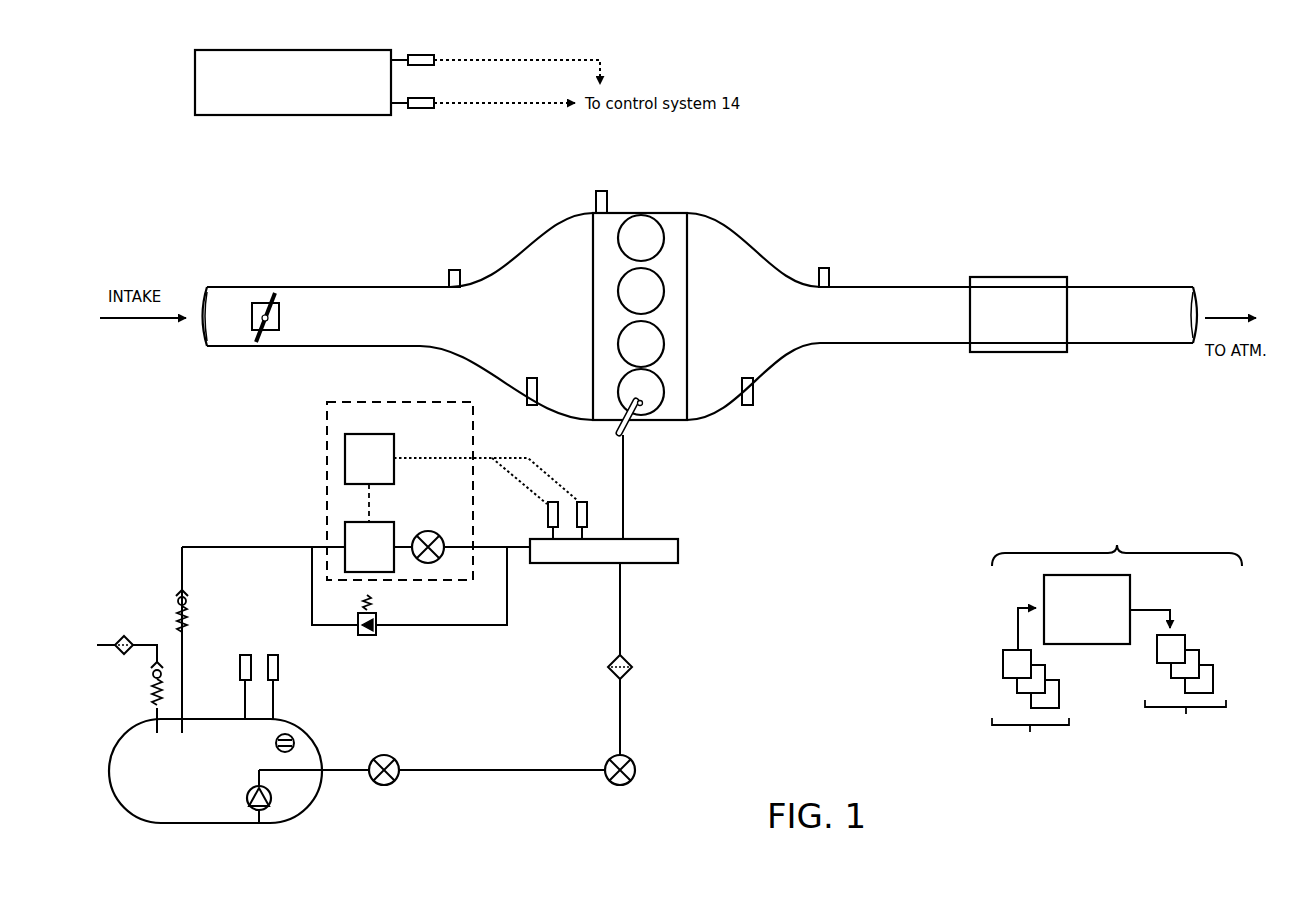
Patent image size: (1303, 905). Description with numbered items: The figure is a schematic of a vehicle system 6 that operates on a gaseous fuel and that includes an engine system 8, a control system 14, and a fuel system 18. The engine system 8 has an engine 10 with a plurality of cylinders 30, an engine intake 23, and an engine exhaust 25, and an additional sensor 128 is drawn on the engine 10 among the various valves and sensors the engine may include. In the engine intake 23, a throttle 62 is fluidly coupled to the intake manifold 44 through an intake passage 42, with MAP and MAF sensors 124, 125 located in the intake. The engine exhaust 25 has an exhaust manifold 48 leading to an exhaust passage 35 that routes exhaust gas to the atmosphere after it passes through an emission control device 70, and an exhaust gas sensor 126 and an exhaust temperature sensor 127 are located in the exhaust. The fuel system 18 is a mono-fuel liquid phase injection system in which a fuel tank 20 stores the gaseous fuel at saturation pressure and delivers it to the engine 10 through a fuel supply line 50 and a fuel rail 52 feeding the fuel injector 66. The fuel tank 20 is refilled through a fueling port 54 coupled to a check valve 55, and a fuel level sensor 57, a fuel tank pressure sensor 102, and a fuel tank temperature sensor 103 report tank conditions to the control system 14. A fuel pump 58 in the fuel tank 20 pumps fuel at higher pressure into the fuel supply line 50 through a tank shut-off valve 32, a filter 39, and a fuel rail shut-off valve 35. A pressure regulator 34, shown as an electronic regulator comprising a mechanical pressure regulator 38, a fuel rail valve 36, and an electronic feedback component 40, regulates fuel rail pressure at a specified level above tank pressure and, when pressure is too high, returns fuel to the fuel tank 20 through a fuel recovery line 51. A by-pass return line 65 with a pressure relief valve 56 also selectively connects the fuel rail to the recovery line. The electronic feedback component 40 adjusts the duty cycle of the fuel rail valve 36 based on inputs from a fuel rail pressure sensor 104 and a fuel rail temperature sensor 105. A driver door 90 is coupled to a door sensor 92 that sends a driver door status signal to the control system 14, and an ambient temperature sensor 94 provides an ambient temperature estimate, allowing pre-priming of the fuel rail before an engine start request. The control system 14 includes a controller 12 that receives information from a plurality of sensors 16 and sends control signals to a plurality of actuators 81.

The vehicle system 6 is at (88, 58).
The engine system 8 is at (770, 198).
The engine 10 is at (687, 298).
The controller 12 is at (1087, 609).
The control system 14 is at (1117, 536).
The sensors 16 is at (1030, 688).
The fuel system 18 is at (130, 508).
The fuel tank 20 is at (287, 823).
The engine intake 23 is at (405, 270).
The engine exhaust 25 is at (1030, 226).
The cylinders 30 is at (661, 228).
The tank shut-off valve 32 is at (396, 745).
The pressure regulator 34 is at (385, 402).
The fuel rail shut-off valve 35 is at (630, 760).
The fuel rail valve 36 is at (440, 535).
The mechanical pressure regulator 38 is at (359, 556).
The filter 39 is at (628, 658).
The electronic feedback component 40 is at (359, 468).
The intake passage 42 is at (312, 346).
The intake manifold 44 is at (543, 327).
The exhaust manifold 48 is at (746, 327).
The fuel supply line 50 is at (457, 772).
The fuel recovery line 51 is at (232, 548).
The fuel rail 52 is at (663, 539).
The fueling port 54 is at (124, 632).
The check valve 55 is at (150, 700).
The pressure relief valve 56 is at (370, 635).
The fuel level sensor 57 is at (288, 735).
The fuel pump 58 is at (271, 798).
The throttle 62 is at (279, 325).
The by-pass return line 65 is at (440, 625).
The fuel injector 66 is at (632, 428).
The emission control device 70 is at (1008, 327).
The actuators 81 is at (1178, 682).
The driver door 90 is at (305, 90).
The door sensor 92 is at (424, 108).
The temperature sensor 94 is at (424, 55).
The fuel tank pressure sensor 102 is at (243, 655).
The fuel tank temperature sensor 103 is at (273, 655).
The fuel rail pressure sensor 104 is at (592, 494).
The fuel rail temperature sensor 105 is at (548, 510).
The MAP sensor 124 is at (460, 283).
The MAF sensor 125 is at (527, 388).
The exhaust gas sensor 126 is at (753, 388).
The temperature sensor 127 is at (819, 280).
The engine coolant temperature sensor 128 is at (607, 205).